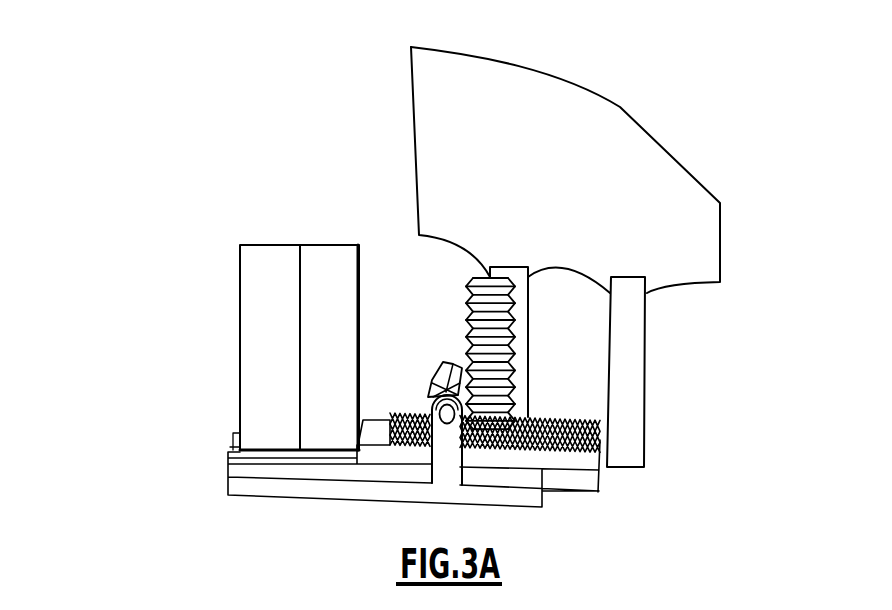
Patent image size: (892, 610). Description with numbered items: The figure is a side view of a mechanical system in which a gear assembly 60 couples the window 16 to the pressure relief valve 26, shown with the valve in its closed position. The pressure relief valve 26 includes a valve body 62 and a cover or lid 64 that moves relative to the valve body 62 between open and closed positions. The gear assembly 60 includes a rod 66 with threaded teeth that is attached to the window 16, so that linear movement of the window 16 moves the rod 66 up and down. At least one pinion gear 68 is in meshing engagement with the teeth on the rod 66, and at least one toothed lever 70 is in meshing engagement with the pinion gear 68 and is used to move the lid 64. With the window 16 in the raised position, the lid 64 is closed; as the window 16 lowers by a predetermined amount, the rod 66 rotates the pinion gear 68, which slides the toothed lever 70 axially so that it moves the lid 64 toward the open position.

The window 16 is at (436, 126).
The pressure relief valve 26 is at (232, 322).
The gear assembly 60 is at (496, 403).
The valve body 62 is at (323, 245).
The lid 64 is at (261, 245).
The rod 66 is at (470, 292).
The pinion gear 68 is at (435, 370).
The toothed lever 70 is at (580, 461).